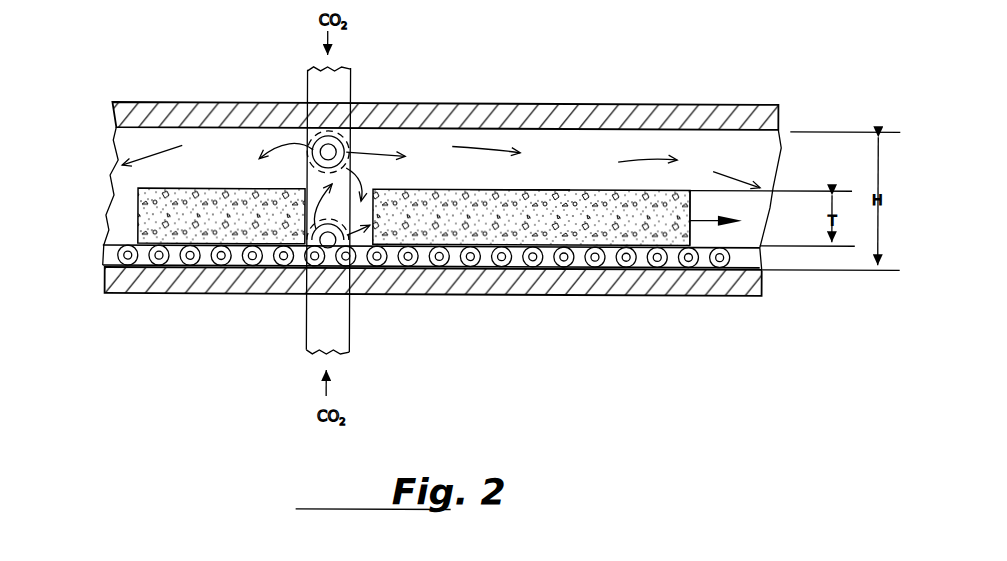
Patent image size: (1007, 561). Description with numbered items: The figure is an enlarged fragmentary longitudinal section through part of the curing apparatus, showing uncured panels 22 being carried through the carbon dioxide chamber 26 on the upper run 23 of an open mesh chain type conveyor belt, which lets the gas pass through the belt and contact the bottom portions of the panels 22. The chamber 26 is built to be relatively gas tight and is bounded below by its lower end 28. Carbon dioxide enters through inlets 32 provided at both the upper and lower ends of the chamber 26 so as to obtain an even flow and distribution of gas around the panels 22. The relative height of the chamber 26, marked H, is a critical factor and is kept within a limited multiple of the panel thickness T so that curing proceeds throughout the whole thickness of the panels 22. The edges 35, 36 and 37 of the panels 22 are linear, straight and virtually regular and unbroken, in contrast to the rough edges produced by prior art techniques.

The uncured panel 22 is at (152, 209).
The upper run of conveyor belt 23 is at (740, 252).
The carbon dioxide chamber 26 is at (467, 102).
The lower end of chamber 28 is at (677, 286).
The inlets for carbon dioxide gas 32 is at (340, 146).
The edge of panel 35 is at (690, 188).
The edge of panel 36 is at (520, 188).
The edge of panel 37 is at (373, 188).